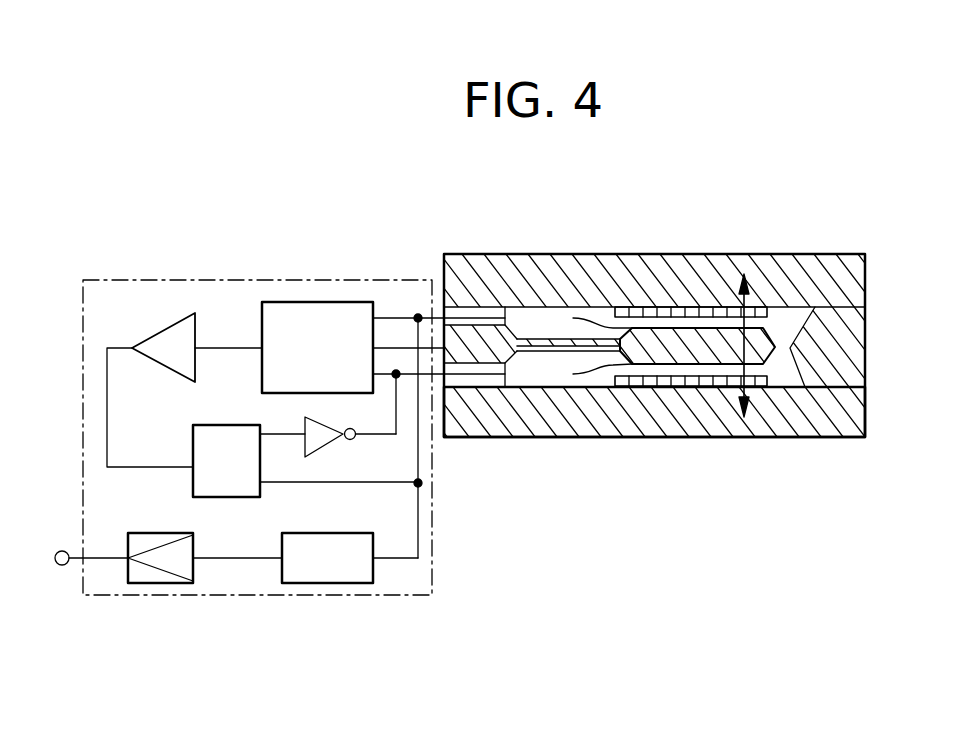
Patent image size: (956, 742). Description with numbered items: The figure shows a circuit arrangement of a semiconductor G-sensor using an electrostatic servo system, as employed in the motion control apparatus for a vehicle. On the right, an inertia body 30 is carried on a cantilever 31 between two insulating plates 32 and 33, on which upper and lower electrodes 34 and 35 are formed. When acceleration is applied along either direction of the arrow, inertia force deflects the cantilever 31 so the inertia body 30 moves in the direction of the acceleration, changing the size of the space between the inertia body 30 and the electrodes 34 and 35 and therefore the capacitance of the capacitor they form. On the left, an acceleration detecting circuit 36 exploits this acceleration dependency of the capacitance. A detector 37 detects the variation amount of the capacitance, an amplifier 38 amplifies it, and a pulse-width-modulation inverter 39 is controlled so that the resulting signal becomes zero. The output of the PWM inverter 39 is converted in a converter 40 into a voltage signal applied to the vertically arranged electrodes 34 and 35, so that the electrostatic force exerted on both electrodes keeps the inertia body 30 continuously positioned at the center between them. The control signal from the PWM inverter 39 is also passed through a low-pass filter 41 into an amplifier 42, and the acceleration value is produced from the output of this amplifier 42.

The inertia body 30 is at (667, 340).
The cantilever 31 is at (552, 345).
The insulating plate 32 is at (815, 265).
The insulating plate 33 is at (825, 425).
The electrode 34 is at (718, 312).
The electrode 35 is at (678, 387).
The acceleration detecting circuit 36 is at (293, 280).
The detector 37 is at (327, 302).
The amplifier 38 is at (153, 336).
The pulse-width-modulation inverter 39 is at (193, 450).
The converter 40 is at (327, 447).
The low-pass filter 41 is at (345, 585).
The amplifier 42 is at (167, 585).